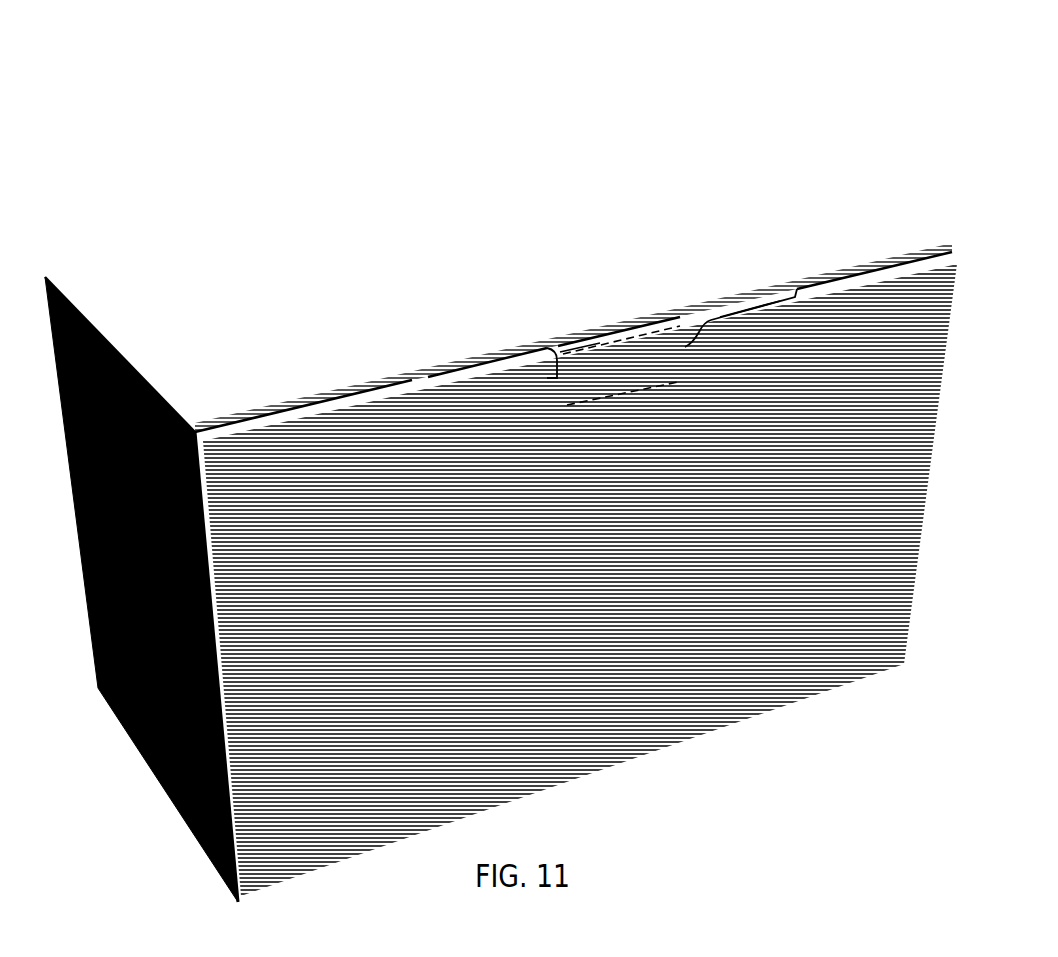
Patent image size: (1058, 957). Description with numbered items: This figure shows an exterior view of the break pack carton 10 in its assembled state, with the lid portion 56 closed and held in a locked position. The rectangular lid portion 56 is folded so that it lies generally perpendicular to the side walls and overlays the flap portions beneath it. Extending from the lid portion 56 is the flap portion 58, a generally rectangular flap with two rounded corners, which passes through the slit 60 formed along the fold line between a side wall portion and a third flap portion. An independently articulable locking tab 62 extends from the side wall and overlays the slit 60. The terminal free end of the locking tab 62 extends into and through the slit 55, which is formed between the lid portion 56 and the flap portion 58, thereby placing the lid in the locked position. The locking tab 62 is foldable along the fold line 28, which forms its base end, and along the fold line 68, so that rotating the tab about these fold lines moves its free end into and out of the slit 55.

The break pack carton 10 is at (872, 146).
The fold line 28 is at (620, 395).
The slit 55 is at (593, 333).
The lid portion 56 is at (460, 263).
The flap portion 58 is at (703, 313).
The slit 60 is at (744, 299).
The locking tab 62 is at (640, 357).
The fold line 68 is at (597, 350).